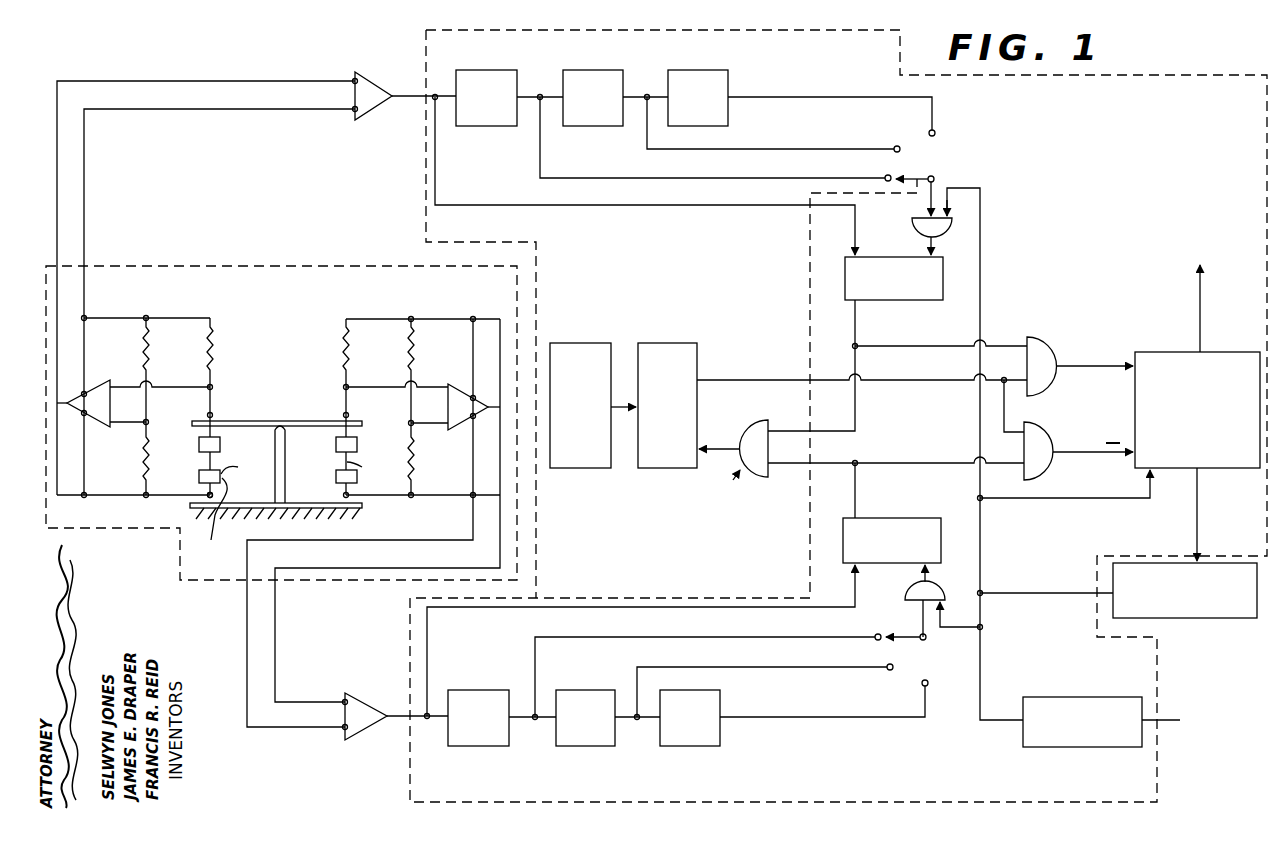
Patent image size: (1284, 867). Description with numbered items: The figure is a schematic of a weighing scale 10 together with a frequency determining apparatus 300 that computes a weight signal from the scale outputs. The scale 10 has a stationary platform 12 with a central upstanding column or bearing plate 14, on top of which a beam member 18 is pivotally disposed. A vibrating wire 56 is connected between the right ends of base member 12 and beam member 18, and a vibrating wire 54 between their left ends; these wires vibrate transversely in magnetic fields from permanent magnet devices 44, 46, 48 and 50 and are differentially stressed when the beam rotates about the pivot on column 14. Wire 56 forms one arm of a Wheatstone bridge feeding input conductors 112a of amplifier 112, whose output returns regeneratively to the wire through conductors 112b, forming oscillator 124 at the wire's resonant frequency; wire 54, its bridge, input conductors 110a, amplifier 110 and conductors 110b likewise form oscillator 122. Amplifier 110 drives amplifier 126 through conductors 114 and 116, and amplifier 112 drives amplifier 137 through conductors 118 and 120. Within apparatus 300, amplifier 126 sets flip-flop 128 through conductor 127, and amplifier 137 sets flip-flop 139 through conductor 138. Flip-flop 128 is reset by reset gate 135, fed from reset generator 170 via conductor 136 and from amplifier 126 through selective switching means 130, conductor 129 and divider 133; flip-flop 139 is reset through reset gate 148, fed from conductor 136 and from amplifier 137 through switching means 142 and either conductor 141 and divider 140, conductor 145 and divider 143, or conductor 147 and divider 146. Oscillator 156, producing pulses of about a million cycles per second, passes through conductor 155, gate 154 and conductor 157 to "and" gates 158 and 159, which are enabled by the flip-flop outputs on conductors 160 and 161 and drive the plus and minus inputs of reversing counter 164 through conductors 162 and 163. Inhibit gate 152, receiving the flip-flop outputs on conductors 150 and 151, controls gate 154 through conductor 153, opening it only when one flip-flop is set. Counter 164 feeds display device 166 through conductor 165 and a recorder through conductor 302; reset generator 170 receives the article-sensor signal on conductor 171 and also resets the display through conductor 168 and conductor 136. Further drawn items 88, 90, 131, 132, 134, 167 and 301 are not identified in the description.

The scale 10 is at (316, 262).
The platform 12 is at (362, 507).
The column 14 is at (221, 497).
The beam member 18 is at (298, 420).
The permanent magnet device 44 is at (221, 446).
The permanent magnet device 46 is at (210, 522).
The permanent magnet device 48 is at (358, 444).
The permanent magnet device 50 is at (336, 484).
The vibrating means 54 is at (199, 460).
The variable vibrating means 56 is at (336, 456).
The junction 88 is at (212, 414).
The junction 90 is at (345, 415).
The amplifier 110 is at (92, 385).
The input conductors 110a is at (125, 388).
The conductors 110b is at (123, 299).
The amplifier 112 is at (450, 384).
The input conductors 112a is at (443, 388).
The conductors 112b is at (463, 305).
The conductor 114 is at (57, 169).
The conductor 116 is at (84, 229).
The conductor 118 is at (276, 603).
The conductor 120 is at (247, 622).
The oscillator 122 is at (207, 300).
The oscillator 124 is at (376, 300).
The amplifier 126 is at (396, 84).
The conductor 127 is at (565, 205).
The flip-flop device 128 is at (845, 280).
The conductor 129 is at (623, 178).
The selective switching means 130 is at (917, 170).
The divide-by-ten counter 131 is at (593, 70).
The line 132 is at (812, 149).
The divider 133 is at (700, 70).
The line 134 is at (862, 97).
The reset gate 135 is at (955, 226).
The conductor 136 is at (980, 239).
The amplifier 137 is at (369, 697).
The conductor 138 is at (732, 607).
The flip-flop device 139 is at (843, 544).
The divider 140 is at (485, 747).
The conductor 141 is at (638, 638).
The selective switching means 142 is at (913, 647).
The divider 143 is at (590, 747).
The conductor 145 is at (758, 667).
The divider 146 is at (700, 747).
The conductor 147 is at (800, 717).
The reset gate 148 is at (947, 588).
The conductor 150 is at (788, 431).
The conductor 151 is at (808, 451).
The "and" inhibit gate 152 is at (760, 478).
The conductor 153 is at (735, 449).
The signal gating device 154 is at (652, 468).
The conductor 155 is at (618, 401).
The oscillator 156 is at (580, 343).
The conductor 157 is at (753, 361).
The "and" gate 158 is at (1032, 337).
The "and" gate 159 is at (1035, 425).
The conductor 160 is at (933, 346).
The conductor 161 is at (927, 441).
The conductor 162 is at (1082, 366).
The conductor 163 is at (1080, 457).
The counter 164 is at (1177, 326).
The conductor 165 is at (1199, 523).
The display device 166 is at (1150, 569).
The reset line 167 is at (1138, 500).
The conductor 168 is at (1088, 594).
The reset generator 170 is at (1108, 697).
The conductor 171 is at (1165, 719).
The frequency determining apparatus 300 is at (1232, 52).
The divide-by-ten counter 301 is at (486, 70).
The conductor 302 is at (1203, 351).